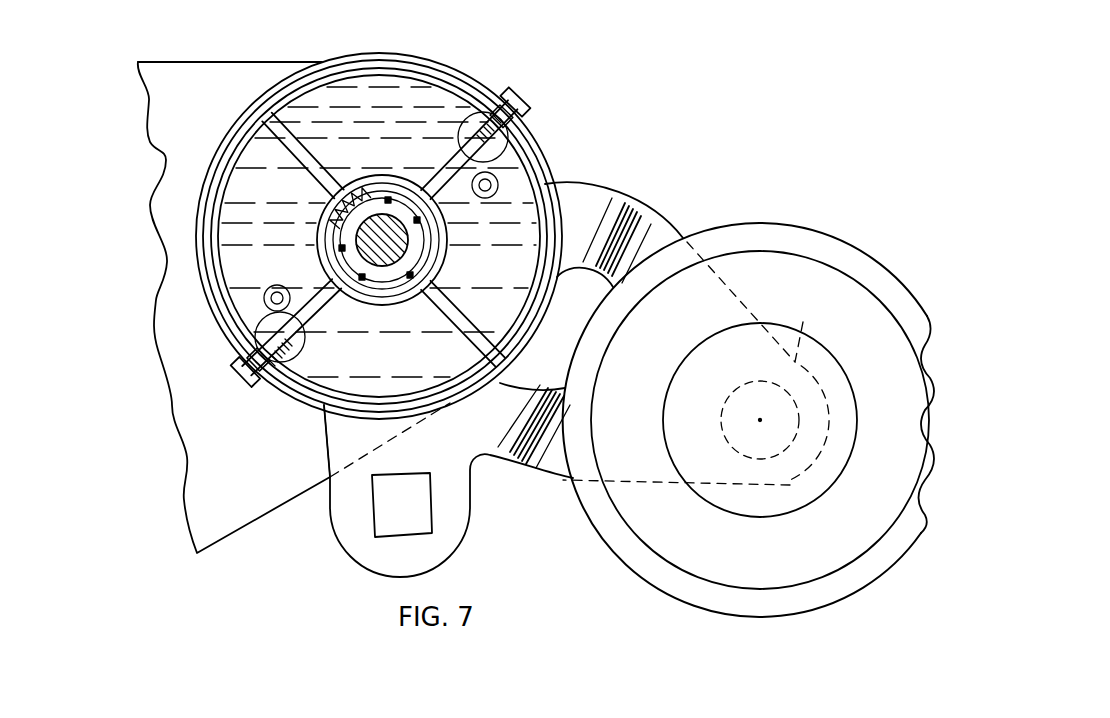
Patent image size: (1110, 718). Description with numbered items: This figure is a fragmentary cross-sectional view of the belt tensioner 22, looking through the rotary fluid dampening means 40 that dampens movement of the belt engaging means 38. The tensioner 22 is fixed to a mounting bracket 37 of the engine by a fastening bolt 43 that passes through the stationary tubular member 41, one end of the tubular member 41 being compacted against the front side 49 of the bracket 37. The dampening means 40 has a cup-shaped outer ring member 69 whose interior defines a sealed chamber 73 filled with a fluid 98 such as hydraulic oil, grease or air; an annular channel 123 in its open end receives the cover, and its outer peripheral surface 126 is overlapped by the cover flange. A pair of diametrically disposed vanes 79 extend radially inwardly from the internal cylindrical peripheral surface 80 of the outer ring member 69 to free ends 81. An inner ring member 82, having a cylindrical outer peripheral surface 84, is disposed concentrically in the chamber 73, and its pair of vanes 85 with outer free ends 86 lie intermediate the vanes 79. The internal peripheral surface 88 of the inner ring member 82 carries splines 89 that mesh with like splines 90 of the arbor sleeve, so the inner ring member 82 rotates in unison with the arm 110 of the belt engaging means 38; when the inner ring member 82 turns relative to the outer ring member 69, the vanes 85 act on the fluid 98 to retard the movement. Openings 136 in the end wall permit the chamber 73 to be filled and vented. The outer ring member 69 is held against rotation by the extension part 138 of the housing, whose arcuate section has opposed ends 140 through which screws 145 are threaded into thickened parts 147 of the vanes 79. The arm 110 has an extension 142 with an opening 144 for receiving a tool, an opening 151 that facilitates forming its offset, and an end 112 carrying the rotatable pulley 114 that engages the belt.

The belt tensioner 22 is at (678, 185).
The mounting bracket 37 is at (165, 154).
The belt engaging means 38 is at (818, 225).
The fluid dampening means 40 is at (545, 142).
The tubular member 41 is at (410, 251).
The fastening bolt 43 is at (370, 244).
The front side of the bracket 49 is at (184, 68).
The outer ring member 69 is at (280, 402).
The sealed chamber 73 is at (550, 198).
The vanes of the outer ring member 79 is at (448, 140).
The internal cylindrical peripheral surface 80 is at (228, 222).
The free ends of the outer vanes 81 is at (422, 193).
The inner ring member 82 is at (318, 231).
The cylindrical outer peripheral surface 84 is at (447, 237).
The vanes of the inner ring member 85 is at (265, 155).
The outer free ends of the inner vanes 86 is at (260, 112).
The internal peripheral surface 88 is at (383, 287).
The splines or ribs of the inner ring member 89 is at (335, 200).
The splines or ribs of the arbor sleeve 90 is at (365, 175).
The fluid 98 is at (374, 96).
The arm 110 is at (538, 463).
The end of the arm 112 is at (805, 320).
The rotatable pulley 114 is at (660, 588).
The annular channel 123 is at (218, 246).
The outer peripheral surface of the outer ring member 126 is at (293, 402).
The opening means 136 is at (498, 182).
The extension part 138 is at (195, 273).
The opposed ends of the arcuate section 140 is at (538, 117).
The extension of the arm 142 is at (380, 566).
The opening 144 is at (392, 534).
The threaded fastening means or screws 145 is at (530, 102).
The thickened parts of the vanes 147 is at (498, 96).
The opening through the arm 151 is at (605, 252).